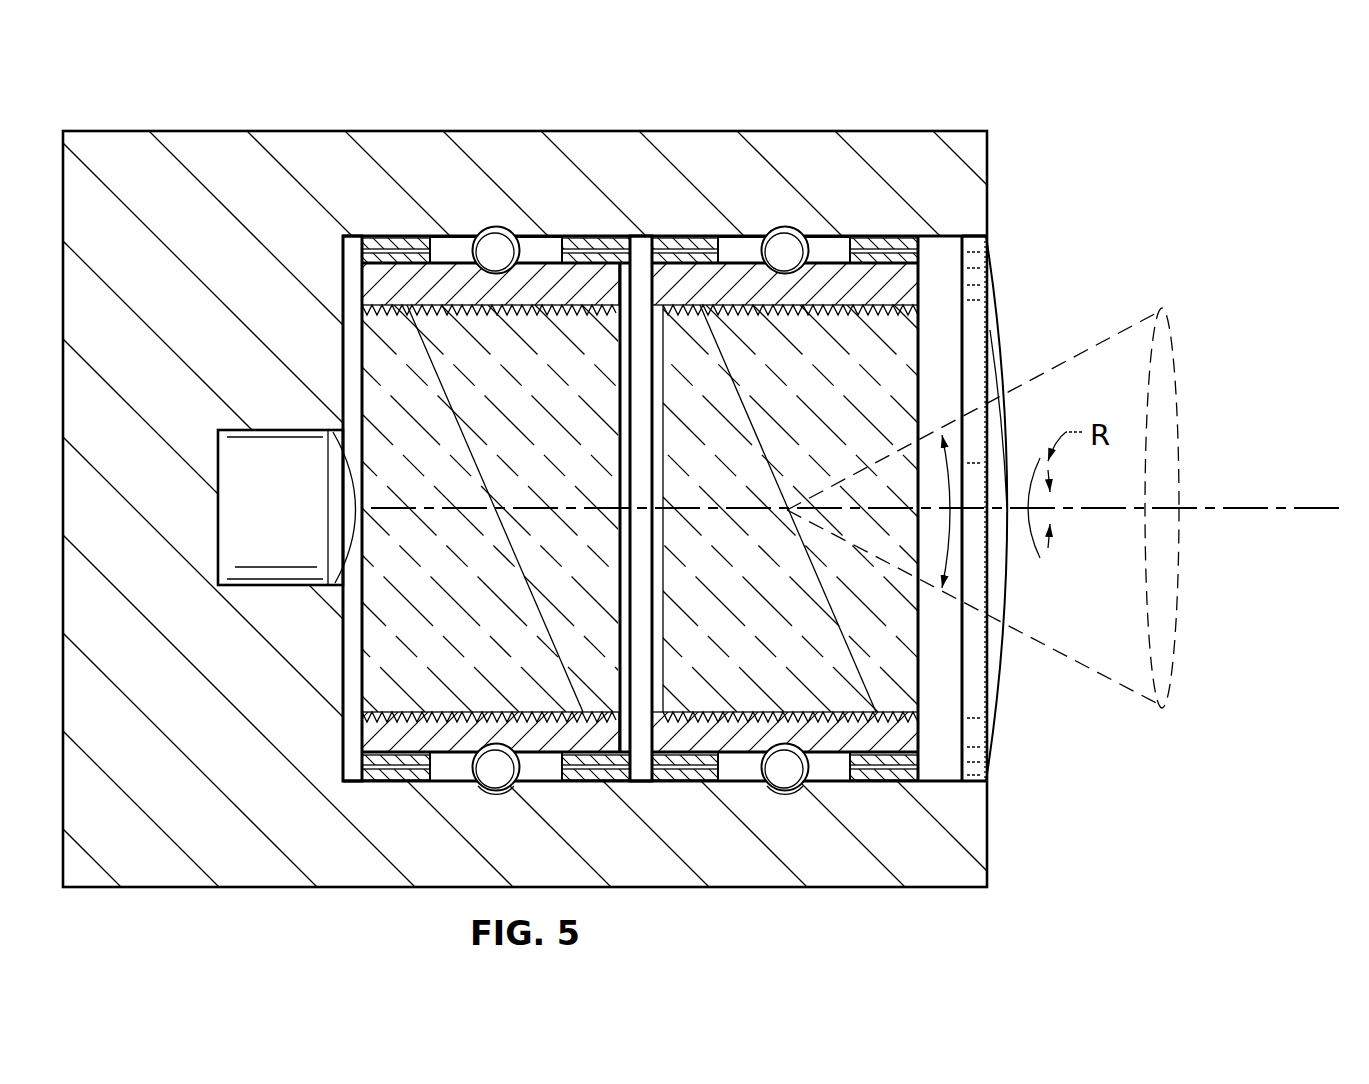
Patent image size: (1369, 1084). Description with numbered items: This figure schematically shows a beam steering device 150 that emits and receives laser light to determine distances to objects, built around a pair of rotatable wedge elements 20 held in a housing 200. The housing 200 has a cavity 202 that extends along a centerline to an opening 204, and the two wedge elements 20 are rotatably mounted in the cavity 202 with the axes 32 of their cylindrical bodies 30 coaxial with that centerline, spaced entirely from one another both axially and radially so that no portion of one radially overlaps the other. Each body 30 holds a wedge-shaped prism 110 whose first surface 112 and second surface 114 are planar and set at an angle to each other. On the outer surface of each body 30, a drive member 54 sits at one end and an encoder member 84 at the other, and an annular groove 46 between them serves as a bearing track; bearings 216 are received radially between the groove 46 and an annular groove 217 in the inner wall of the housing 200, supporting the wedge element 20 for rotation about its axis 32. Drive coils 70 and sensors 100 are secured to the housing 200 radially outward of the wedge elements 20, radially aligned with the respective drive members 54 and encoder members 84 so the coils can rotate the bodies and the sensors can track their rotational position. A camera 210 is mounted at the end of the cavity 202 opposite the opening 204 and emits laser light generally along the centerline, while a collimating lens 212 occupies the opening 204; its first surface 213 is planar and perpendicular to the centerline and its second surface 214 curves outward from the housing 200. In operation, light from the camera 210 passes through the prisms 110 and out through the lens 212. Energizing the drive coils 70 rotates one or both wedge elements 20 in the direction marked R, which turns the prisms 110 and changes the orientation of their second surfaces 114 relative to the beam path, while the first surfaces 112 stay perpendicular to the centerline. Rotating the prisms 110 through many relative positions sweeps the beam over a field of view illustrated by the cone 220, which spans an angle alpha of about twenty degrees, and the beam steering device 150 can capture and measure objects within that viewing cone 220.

The wedge element 20 is at (355, 735).
The cylindrical body 30 is at (455, 752).
The axis 32 is at (1262, 481).
The annular groove 46 is at (478, 272).
The drive member 54 is at (642, 239).
The drive coil 70 is at (605, 244).
The encoder member 84 is at (384, 256).
The sensor 100 is at (407, 243).
The wedge-shaped prism 110 is at (575, 433).
The first surface 112 is at (622, 408).
The second surface 114 is at (745, 405).
The beam steering device 150 is at (1192, 251).
The housing 200 is at (563, 113).
The cavity 202 is at (937, 352).
The opening 204 is at (997, 238).
The camera 210 is at (302, 521).
The collimating lens 212 is at (1003, 304).
The first surface 213 is at (962, 388).
The second surface 214 is at (1003, 350).
The bearing 216 is at (487, 228).
The annular groove 217 is at (500, 792).
The cone 220 is at (1182, 426).